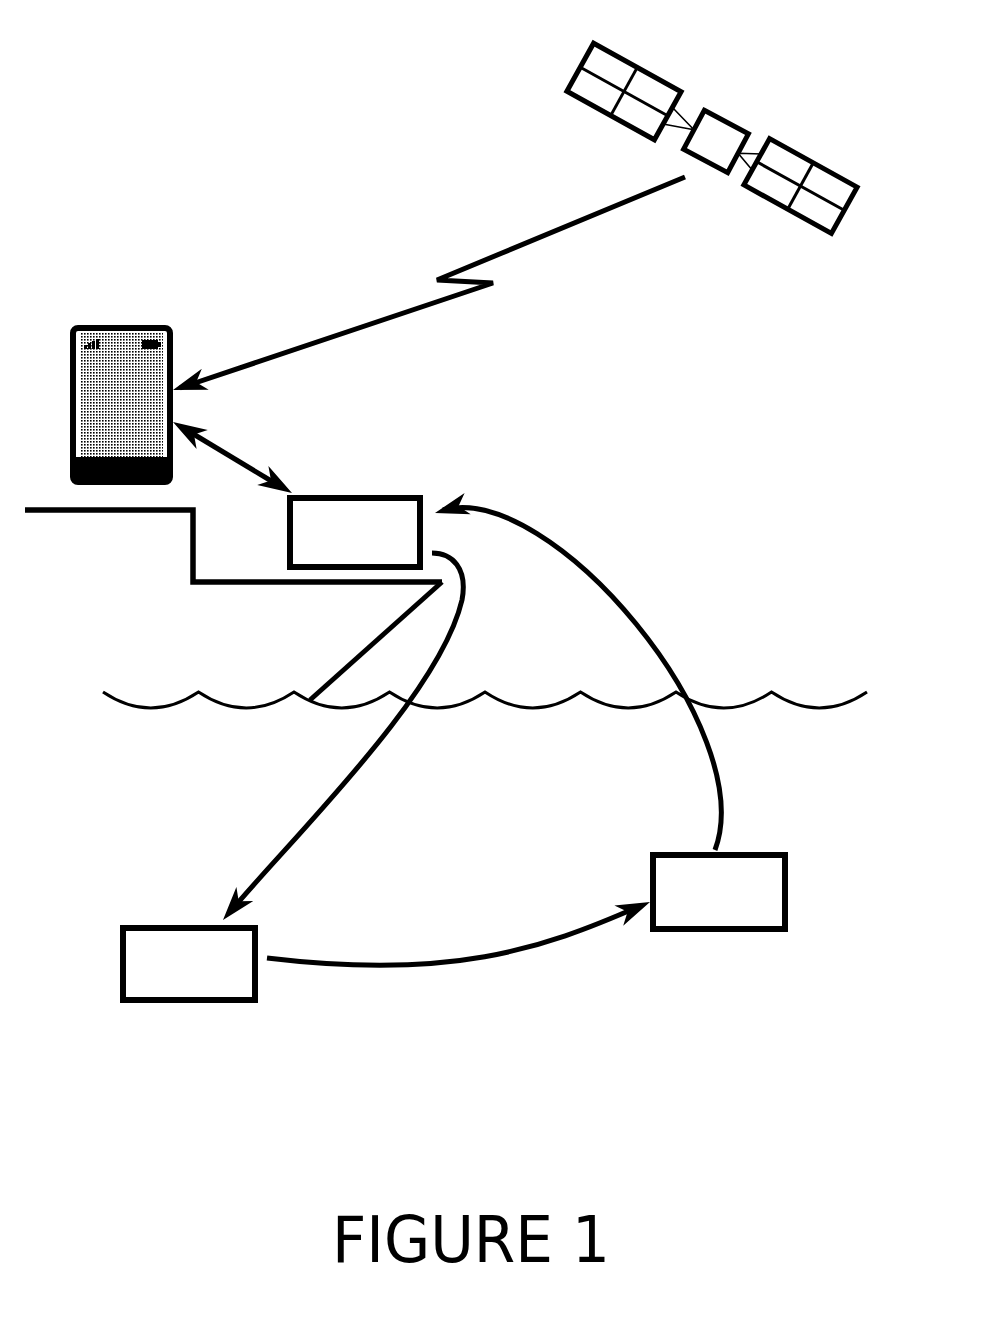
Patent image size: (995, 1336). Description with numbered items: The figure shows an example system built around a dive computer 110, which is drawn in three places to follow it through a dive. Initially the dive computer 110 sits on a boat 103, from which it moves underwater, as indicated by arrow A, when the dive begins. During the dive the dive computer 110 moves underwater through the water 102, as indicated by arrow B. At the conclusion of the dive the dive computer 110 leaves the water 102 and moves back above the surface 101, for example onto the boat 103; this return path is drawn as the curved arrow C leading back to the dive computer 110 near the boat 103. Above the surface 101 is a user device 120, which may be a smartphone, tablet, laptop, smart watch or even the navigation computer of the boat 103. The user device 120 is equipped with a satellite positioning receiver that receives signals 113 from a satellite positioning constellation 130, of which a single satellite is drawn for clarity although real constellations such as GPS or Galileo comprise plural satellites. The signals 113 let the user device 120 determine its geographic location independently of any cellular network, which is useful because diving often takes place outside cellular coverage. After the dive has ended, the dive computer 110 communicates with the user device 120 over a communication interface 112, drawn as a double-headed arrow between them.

The satellite positioning constellation 130 is at (731, 120).
The user device 120 is at (107, 333).
The signals 113 is at (458, 272).
The interface 112 is at (238, 457).
The dive computer 110 is at (454, 749).
The boat 103 is at (341, 641).
The surface 101 is at (843, 657).
The water 102 is at (486, 727).
The arrow A is at (323, 810).
The arrow B is at (483, 960).
The communication path C is at (643, 622).